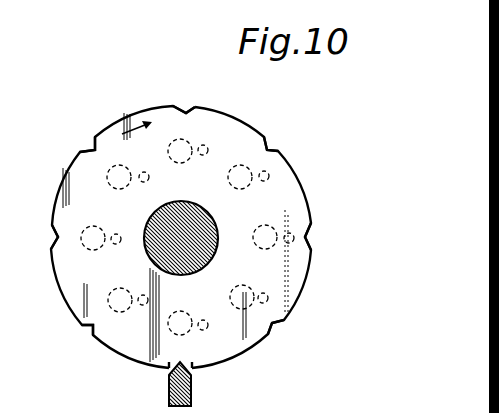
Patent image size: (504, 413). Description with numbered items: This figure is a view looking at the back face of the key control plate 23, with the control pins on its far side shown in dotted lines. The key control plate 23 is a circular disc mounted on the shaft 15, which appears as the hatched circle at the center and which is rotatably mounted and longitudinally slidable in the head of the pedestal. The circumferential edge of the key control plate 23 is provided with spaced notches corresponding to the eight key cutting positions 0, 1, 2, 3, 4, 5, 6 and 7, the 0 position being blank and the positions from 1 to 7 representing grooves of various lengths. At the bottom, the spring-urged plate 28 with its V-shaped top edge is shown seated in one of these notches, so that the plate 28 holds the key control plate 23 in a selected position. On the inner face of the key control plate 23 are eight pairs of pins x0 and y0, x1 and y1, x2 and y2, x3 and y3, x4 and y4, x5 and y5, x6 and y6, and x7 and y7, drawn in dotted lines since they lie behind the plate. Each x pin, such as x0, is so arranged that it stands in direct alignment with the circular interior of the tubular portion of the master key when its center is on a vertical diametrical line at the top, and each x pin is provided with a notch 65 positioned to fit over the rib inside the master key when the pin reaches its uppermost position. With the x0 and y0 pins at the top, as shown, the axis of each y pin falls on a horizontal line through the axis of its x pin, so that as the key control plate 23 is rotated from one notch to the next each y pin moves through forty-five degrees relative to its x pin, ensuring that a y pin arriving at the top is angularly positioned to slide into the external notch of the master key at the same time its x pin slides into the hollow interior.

The key cutting position 0 is at (184, 99).
The key cutting position 1 is at (84, 139).
The key cutting position 2 is at (44, 237).
The key cutting position 3 is at (79, 339).
The key cutting position 4 is at (180, 356).
The key cutting position 5 is at (277, 334).
The key cutting position 6 is at (319, 236).
The key cutting position 7 is at (279, 138).
The shaft 15 is at (229, 234).
The key control plate 23 is at (61, 185).
The plate 28 is at (168, 392).
The notch 65 is at (94, 226).
The x pin of pair x0-y0 x0 is at (189, 143).
The y pin of pair x0- y0 is at (207, 146).
The x pin of pair x1-y1 x1 is at (115, 166).
The y pin of pair x1- y1 is at (144, 172).
The x pin of pair x2-y2 x2 is at (82, 246).
The y pin of pair x2- y2 is at (112, 247).
The x pin of pair x3-y3 x3 is at (121, 312).
The y pin of pair x3- y3 is at (142, 305).
The x pin of pair x4-y4 x4 is at (189, 334).
The y pin of pair x4- y4 is at (207, 330).
The x pin of pair x5-y5 x5 is at (254, 305).
The y pin of pair x5- y5 is at (269, 298).
The x pin of pair x6-y6 x6 is at (276, 230).
The y pin of pair x6- y6 is at (295, 236).
The x pin of pair x7-y7 x7 is at (248, 167).
The y pin of pair x7- y7 is at (270, 176).